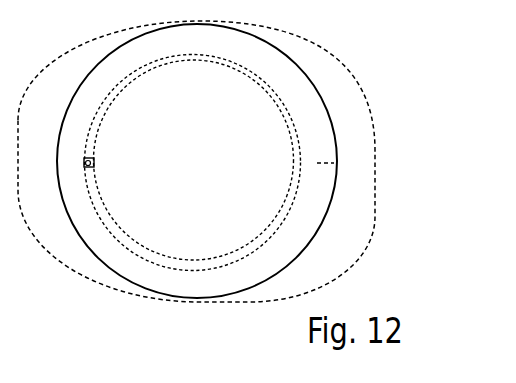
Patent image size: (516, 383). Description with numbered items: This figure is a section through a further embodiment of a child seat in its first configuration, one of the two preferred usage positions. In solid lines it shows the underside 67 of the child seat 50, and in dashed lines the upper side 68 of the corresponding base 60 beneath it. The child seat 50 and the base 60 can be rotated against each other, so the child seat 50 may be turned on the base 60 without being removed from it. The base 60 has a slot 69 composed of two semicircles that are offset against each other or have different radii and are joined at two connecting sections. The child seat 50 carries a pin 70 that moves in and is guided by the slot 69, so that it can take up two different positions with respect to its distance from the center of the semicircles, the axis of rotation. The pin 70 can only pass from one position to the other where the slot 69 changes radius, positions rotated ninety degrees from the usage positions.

The child seat 50 is at (320, 97).
The base 60 is at (375, 160).
The underside 67 is at (337, 143).
The upper side 68 is at (368, 214).
The slot 69 is at (233, 63).
The pin 70 is at (90, 165).